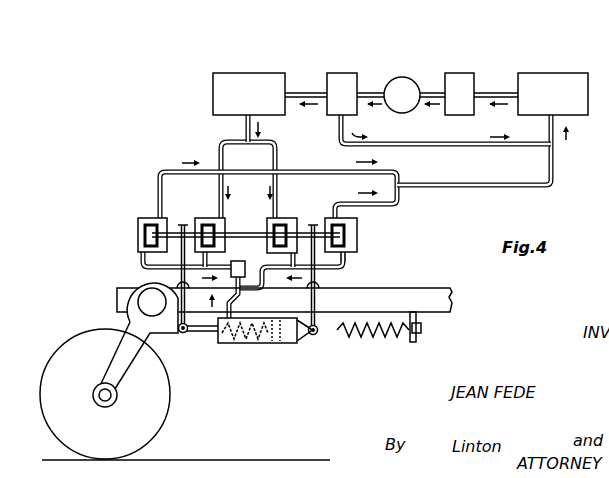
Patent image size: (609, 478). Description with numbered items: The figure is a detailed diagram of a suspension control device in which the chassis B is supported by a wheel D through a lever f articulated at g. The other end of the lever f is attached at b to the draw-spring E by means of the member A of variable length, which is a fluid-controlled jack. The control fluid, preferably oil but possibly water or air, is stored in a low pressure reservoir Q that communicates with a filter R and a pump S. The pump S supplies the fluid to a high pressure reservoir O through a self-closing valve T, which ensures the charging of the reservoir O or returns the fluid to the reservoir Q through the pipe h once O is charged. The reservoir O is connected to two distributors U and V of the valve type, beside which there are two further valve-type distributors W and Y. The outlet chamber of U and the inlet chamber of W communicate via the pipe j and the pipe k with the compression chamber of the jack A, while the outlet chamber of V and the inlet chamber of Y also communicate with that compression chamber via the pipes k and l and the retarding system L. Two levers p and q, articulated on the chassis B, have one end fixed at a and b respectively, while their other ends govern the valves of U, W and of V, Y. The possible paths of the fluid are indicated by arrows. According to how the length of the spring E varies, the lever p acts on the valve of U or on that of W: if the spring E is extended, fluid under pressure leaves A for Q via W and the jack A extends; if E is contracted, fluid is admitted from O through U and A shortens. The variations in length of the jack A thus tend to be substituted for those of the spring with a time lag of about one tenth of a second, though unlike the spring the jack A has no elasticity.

The high pressure reservoir O is at (262, 83).
The self-closing valve T is at (341, 82).
The pump S is at (402, 86).
The filter R is at (464, 83).
The low pressure reservoir Q is at (553, 83).
The pipe h is at (441, 146).
The distributor Y is at (138, 219).
The distributor V is at (204, 219).
The distributor U is at (292, 223).
The distributor W is at (358, 228).
The retarding system L is at (239, 262).
The lever q is at (181, 260).
The pipe l is at (164, 266).
The articulation g is at (152, 302).
The lever p is at (352, 259).
The pipe j is at (344, 262).
The chassis B is at (121, 302).
The pipe k is at (240, 311).
The lever f is at (122, 360).
The attachment point b is at (187, 334).
The member of variable length A is at (261, 343).
The attachment point a is at (316, 334).
The draw-spring E is at (373, 334).
The wheel D is at (138, 415).